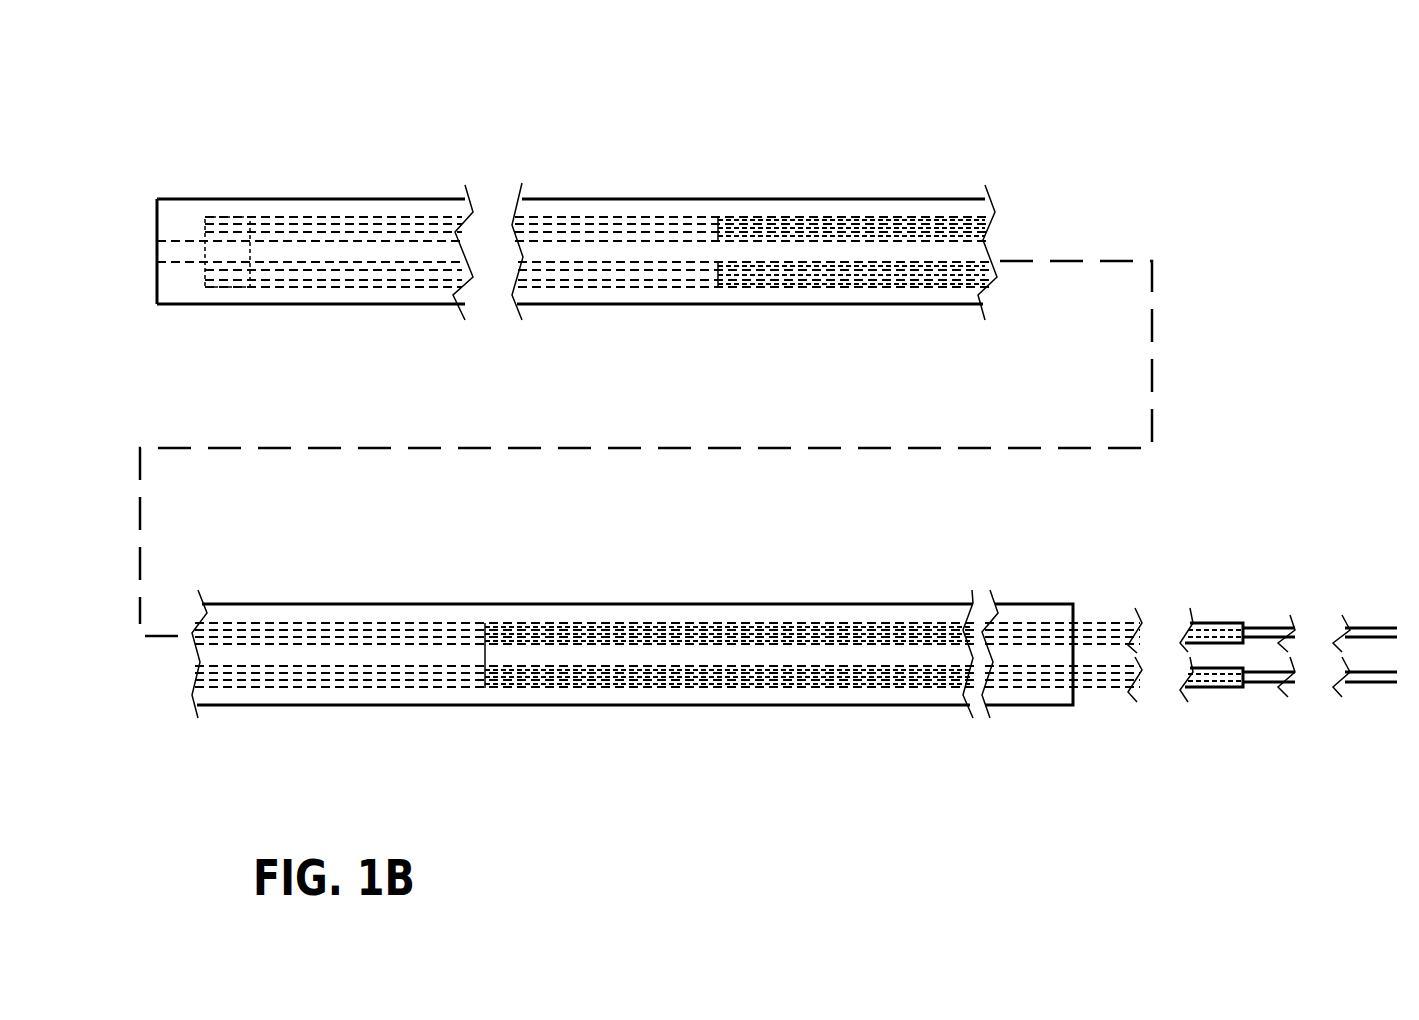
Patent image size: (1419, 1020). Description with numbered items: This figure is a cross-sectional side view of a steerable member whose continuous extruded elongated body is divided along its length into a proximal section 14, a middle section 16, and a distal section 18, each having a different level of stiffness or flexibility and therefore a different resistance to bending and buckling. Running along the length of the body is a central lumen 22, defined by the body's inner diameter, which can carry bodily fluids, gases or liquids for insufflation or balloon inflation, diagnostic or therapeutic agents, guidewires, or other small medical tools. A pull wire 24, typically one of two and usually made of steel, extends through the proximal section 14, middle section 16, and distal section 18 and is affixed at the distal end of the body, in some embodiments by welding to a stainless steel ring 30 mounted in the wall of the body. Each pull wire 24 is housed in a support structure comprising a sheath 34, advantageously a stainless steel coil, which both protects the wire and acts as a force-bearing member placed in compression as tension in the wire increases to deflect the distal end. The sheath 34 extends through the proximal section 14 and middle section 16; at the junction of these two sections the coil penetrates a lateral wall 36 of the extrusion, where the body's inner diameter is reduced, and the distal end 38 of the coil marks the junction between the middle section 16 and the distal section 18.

The proximal section 14 is at (945, 604).
The middle section 16 is at (355, 603).
The distal section 18 is at (567, 198).
The central lumen 22 is at (168, 248).
The pull wire 24 is at (1372, 622).
The stainless steel ring 30 is at (232, 282).
The sheath 34 is at (1215, 622).
The lateral wall 36 is at (489, 642).
The distal end of the coils 38 is at (722, 216).